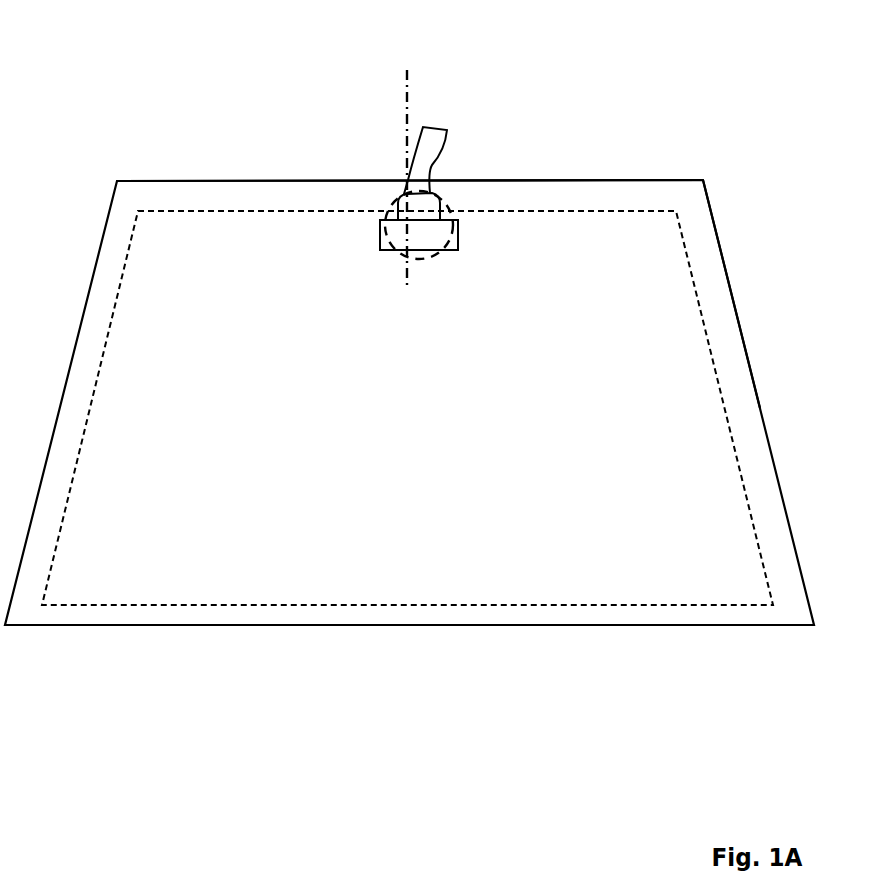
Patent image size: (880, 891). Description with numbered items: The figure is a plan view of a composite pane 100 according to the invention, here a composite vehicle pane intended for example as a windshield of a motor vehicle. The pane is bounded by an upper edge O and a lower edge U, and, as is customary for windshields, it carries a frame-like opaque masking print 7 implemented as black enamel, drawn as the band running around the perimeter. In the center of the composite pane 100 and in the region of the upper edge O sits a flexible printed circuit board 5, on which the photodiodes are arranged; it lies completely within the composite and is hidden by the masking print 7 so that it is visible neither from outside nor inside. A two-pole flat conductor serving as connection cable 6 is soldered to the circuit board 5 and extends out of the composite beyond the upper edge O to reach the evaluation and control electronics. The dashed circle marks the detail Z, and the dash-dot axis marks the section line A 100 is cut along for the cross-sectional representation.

The composite pane 100 is at (120, 145).
The flexible printed circuit board 5 is at (449, 204).
The connection cable 6 is at (437, 141).
The masking print 7 is at (694, 208).
The upper edge O is at (620, 179).
The lower edge U is at (620, 627).
The detail Z is at (398, 208).
The section line A-A' A is at (418, 172).